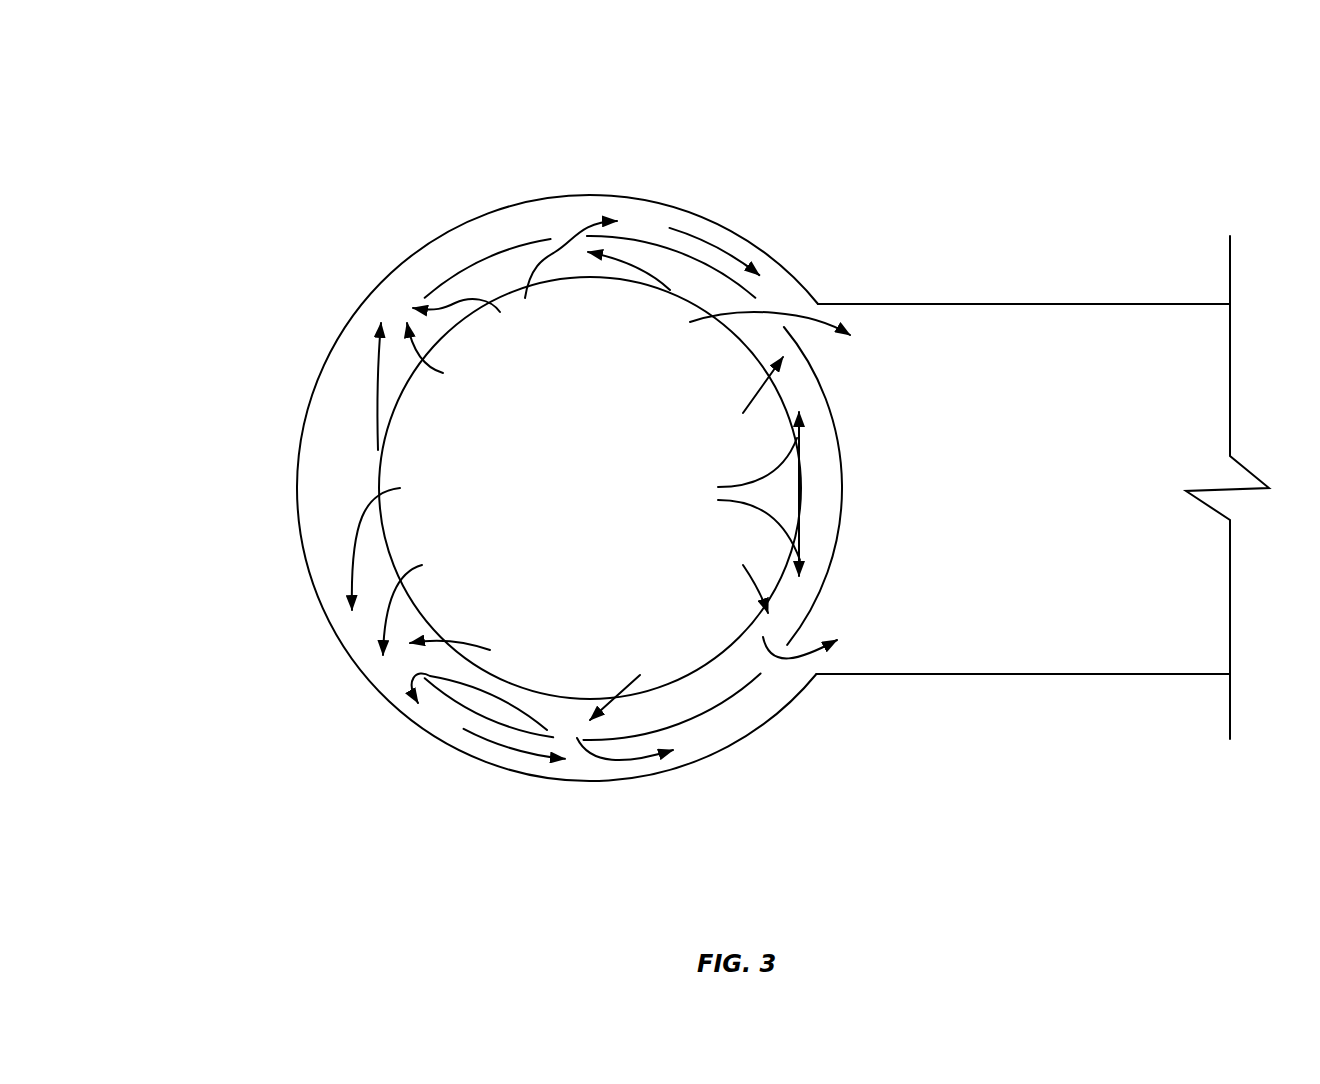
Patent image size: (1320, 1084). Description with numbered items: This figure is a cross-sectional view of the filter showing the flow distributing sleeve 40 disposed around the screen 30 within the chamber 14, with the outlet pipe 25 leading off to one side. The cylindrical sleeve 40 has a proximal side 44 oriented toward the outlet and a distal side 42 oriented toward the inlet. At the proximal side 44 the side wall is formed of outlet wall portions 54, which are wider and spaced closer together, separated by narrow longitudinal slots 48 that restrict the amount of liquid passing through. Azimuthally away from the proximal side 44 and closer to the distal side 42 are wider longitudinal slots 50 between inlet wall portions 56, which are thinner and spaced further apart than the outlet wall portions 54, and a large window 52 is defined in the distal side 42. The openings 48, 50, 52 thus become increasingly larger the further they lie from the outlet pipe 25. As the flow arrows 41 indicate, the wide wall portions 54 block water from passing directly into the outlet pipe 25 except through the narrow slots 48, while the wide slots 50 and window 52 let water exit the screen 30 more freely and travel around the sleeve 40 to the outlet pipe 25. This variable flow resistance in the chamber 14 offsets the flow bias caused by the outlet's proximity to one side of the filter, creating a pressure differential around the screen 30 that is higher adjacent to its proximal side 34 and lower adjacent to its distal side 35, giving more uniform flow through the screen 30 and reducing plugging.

The chamber 14 is at (505, 510).
The outlet pipe 25 is at (1048, 674).
The screen 30 is at (452, 338).
The proximal side 34 is at (783, 412).
The distal side 35 is at (385, 545).
The flow distribution sleeve 40 is at (772, 492).
The flow arrows 41 is at (570, 237).
The distal side 42 is at (350, 480).
The proximal side 44 is at (840, 457).
The narrow longitudinal slots 48 is at (847, 733).
The wide longitudinal slots 50 is at (622, 828).
The window 52 is at (347, 452).
The outlet wall portions 54 is at (650, 242).
The inlet wall portions 56 is at (450, 277).